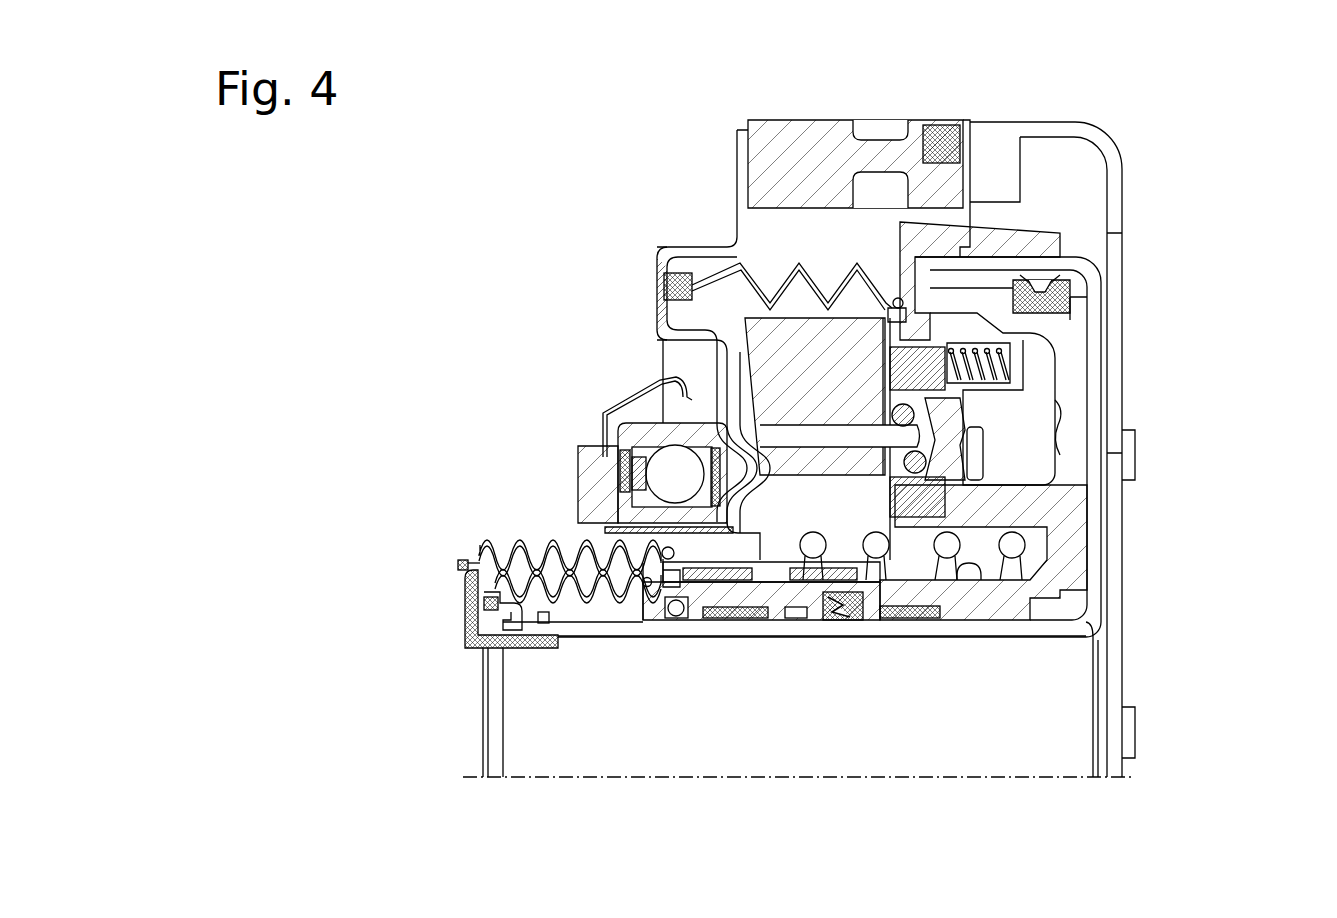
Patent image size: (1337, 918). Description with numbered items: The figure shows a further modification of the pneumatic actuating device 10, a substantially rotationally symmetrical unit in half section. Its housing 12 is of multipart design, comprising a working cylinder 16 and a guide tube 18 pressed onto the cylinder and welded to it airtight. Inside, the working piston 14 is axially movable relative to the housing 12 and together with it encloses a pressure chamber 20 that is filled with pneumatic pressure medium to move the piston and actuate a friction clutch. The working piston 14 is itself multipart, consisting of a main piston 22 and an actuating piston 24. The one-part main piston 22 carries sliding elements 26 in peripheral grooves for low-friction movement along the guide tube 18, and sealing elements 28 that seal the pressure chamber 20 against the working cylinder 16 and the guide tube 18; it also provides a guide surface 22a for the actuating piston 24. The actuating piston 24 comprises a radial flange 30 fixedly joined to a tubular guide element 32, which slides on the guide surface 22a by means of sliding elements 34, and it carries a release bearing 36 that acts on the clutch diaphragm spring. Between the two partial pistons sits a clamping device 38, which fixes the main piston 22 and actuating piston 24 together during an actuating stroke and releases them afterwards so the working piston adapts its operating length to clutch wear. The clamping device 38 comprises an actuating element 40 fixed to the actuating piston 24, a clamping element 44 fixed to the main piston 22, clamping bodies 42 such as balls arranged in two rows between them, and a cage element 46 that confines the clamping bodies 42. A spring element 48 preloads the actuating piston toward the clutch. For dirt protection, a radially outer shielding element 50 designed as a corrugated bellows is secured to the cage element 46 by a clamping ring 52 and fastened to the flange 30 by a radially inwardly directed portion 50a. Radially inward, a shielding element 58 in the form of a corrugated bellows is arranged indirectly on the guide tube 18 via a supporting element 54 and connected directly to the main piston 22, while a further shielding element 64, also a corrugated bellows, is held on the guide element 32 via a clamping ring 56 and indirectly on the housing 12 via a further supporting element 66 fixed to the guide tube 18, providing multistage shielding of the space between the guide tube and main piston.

The pneumatic actuating device 10 is at (1152, 170).
The housing 12 is at (1097, 262).
The working piston 14 is at (843, 357).
The working cylinder 16 is at (1094, 337).
The guide tube 18 is at (1036, 628).
The pressure chamber 20 is at (1077, 287).
The main piston 22 is at (1050, 508).
The guide surface 22a is at (970, 567).
The actuating piston 24 is at (690, 418).
The sliding elements 26 is at (736, 615).
The sealing elements 28 is at (1043, 290).
The flange 30 is at (682, 303).
The guide element 32 is at (774, 579).
The sliding elements 34 is at (698, 578).
The release bearing 36 is at (570, 462).
The clamping device 38 is at (826, 248).
The actuating element 40 is at (815, 432).
The clamping bodies 42 is at (919, 462).
The clamping element 44 is at (924, 370).
The cage element 46 is at (983, 229).
The spring element 48 is at (1016, 547).
The radially outer shielding element 50 is at (782, 283).
The radially inwardly directed portion 50a is at (670, 288).
The clamping ring 52 is at (897, 297).
The supporting element 54 is at (497, 608).
The clamping ring 56 is at (668, 555).
The shielding element 58 is at (565, 593).
The shielding element 64 is at (550, 543).
The further supporting element 66 is at (470, 590).